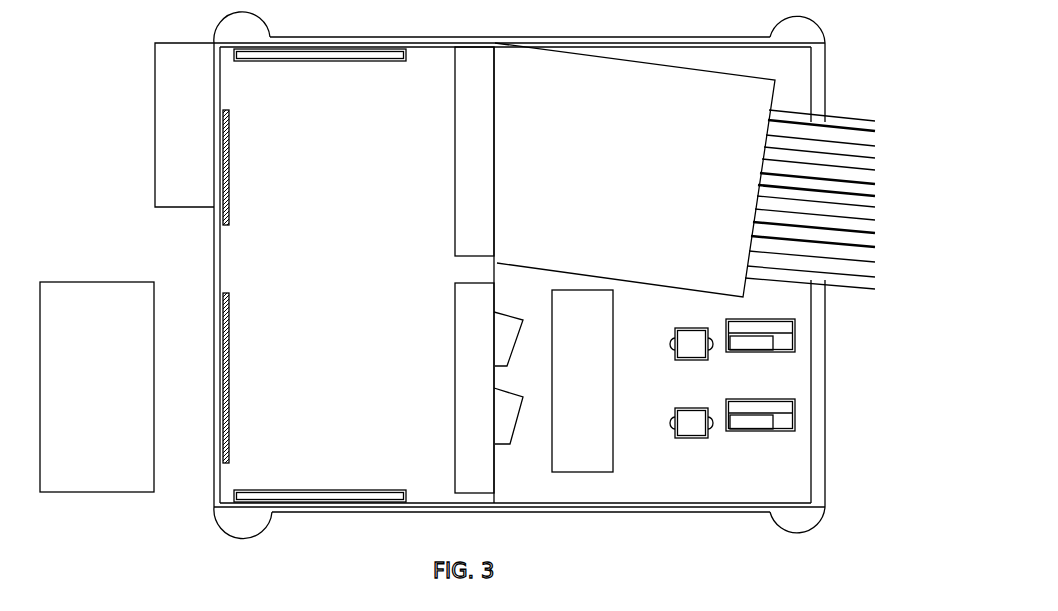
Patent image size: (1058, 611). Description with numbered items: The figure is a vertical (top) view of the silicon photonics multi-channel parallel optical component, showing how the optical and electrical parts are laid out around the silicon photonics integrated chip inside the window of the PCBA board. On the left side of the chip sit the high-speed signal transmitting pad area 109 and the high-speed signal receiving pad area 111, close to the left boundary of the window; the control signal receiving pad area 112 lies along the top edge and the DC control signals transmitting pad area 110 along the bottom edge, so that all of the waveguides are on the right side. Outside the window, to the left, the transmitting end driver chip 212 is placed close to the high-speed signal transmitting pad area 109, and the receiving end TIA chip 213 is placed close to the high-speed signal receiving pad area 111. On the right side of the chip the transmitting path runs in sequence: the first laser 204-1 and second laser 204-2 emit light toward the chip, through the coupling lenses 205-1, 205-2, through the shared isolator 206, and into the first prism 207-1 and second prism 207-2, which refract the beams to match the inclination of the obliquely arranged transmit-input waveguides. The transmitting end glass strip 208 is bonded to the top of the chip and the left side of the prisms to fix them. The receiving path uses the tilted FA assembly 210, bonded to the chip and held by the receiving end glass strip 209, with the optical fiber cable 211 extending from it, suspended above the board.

The high-speed signal transmitting pad area 109 is at (229, 321).
The DC control signals transmitting pad area 110 is at (362, 491).
The high-speed signal receiving pad area 111 is at (230, 170).
The control signal receiving pad area 112 is at (290, 62).
The first laser 204-1 is at (790, 427).
The second laser 204-2 is at (788, 343).
The coupling lens 205-1 is at (706, 437).
The coupling lens 205-2 is at (713, 358).
The isolator 206 is at (615, 456).
The first prism 207-1 is at (508, 446).
The second prism 207-2 is at (500, 338).
The transmitting end glass strip 208 is at (460, 430).
The receiving end glass strip 209 is at (477, 236).
The FA assembly 210 is at (593, 103).
The optical fiber cable 211 is at (827, 133).
The transmitting end driver chip 212 is at (124, 293).
The receiving end TIA chip 213 is at (176, 133).